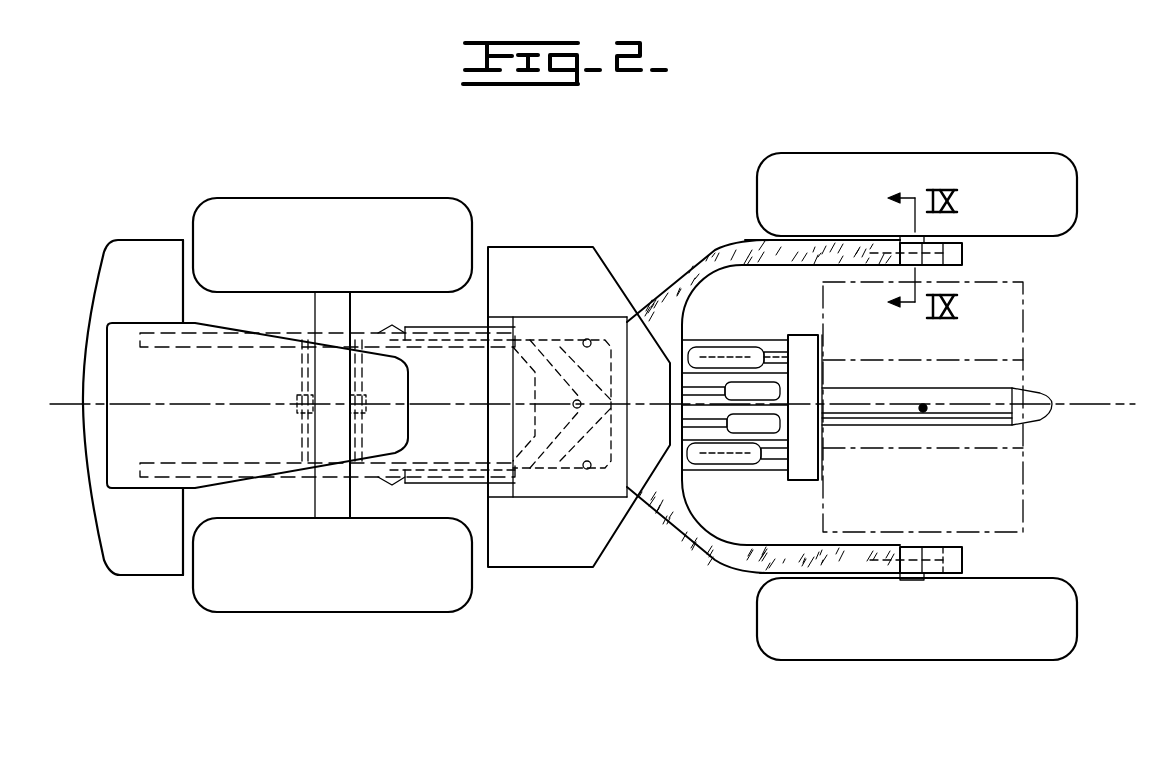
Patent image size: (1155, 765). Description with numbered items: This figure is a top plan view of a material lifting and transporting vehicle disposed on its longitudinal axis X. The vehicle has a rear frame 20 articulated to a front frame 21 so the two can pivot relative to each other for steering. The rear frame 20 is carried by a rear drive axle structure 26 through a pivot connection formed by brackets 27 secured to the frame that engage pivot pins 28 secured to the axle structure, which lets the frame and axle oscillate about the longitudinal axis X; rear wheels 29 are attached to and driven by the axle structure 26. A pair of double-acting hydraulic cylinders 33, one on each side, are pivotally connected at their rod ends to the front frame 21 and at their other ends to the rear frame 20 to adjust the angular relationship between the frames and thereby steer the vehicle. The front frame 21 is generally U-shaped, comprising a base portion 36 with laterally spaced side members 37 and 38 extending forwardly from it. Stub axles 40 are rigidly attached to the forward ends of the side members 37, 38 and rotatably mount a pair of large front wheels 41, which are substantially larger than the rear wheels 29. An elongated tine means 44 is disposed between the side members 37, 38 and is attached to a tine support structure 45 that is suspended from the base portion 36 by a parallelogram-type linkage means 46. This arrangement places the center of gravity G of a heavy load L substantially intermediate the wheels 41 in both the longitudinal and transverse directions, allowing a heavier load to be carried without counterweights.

The rear frame 20 is at (140, 229).
The front frame 21 is at (763, 392).
The rear drive axle structure 26 is at (322, 485).
The brackets 27 is at (302, 368).
The pivot pins 28 is at (296, 408).
The wheels 29 is at (338, 163).
The double-acting hydraulic cylinders 33 is at (416, 325).
The base portion 36 is at (654, 520).
The side member 37 is at (844, 554).
The side member 38 is at (809, 262).
The stub axles 40 is at (958, 248).
The wheels 41 is at (1013, 160).
The tine means 44 is at (862, 420).
The tine support structure 45 is at (806, 477).
The linkage means 46 is at (718, 310).
The center of gravity G is at (923, 408).
The load L is at (1010, 500).
The longitudinal axis X is at (1100, 365).